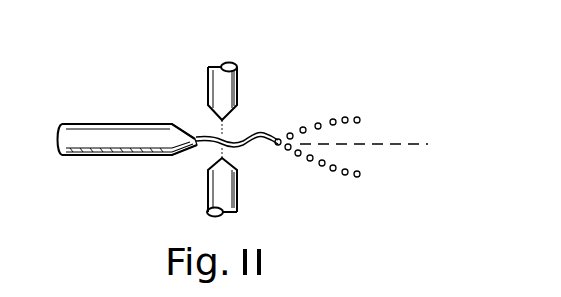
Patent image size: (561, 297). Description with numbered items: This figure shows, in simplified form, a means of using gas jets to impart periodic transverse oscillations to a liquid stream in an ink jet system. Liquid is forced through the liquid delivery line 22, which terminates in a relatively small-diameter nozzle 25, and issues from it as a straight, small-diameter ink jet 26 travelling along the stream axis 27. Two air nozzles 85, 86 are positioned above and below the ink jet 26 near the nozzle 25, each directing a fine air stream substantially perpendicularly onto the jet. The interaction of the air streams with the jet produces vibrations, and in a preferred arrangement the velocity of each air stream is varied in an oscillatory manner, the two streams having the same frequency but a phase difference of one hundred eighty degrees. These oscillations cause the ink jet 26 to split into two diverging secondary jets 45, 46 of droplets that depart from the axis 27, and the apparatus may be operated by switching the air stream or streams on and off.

The liquid delivery line 22 is at (133, 128).
The nozzle 25 is at (194, 138).
The ink jet 26 is at (242, 132).
The axis 27 is at (378, 142).
The secondary jet 45 is at (333, 119).
The secondary jet 46 is at (321, 166).
The air nozzle 85 is at (235, 87).
The air nozzle 86 is at (235, 188).